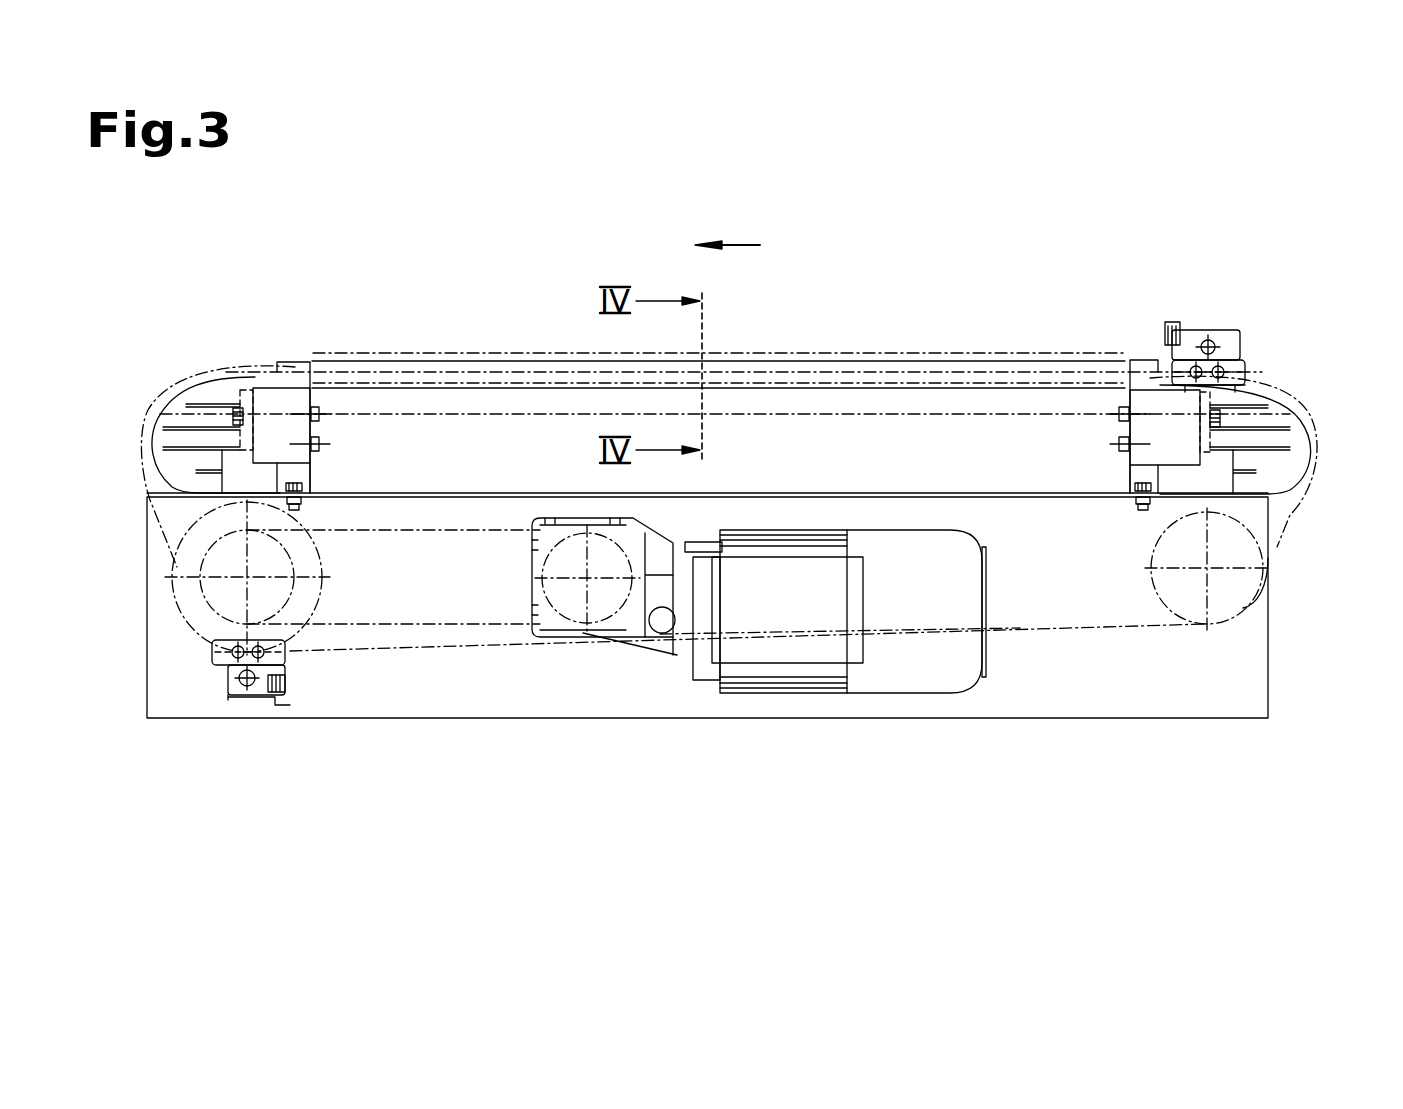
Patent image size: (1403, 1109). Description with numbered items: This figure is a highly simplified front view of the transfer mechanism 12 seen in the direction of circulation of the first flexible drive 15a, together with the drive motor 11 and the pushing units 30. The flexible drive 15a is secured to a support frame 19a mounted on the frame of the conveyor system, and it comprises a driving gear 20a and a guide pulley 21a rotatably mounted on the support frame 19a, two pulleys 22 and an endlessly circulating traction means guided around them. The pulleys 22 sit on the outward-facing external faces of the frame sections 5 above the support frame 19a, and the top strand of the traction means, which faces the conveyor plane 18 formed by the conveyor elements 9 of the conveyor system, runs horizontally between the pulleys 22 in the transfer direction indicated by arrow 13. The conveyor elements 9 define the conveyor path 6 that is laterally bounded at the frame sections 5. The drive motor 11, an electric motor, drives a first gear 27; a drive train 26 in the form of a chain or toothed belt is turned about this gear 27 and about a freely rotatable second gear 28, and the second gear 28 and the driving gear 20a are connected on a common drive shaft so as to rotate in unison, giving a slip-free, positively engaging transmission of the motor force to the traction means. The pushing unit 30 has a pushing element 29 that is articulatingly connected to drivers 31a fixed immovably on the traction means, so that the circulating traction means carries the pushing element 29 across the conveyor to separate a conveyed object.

The frame section 5 is at (312, 473).
The conveyor path 6 is at (862, 300).
The conveyor element 9 is at (500, 357).
The drive motor 11 is at (950, 694).
The transfer mechanism 12 is at (1182, 220).
The arrow indicating transfer direction 13 is at (741, 243).
The first flexible drive 15a is at (1300, 560).
The conveyor plane 18 is at (1003, 352).
The support frame 19a is at (1205, 720).
The driving gear 20a is at (190, 606).
The guide pulley 21a is at (1268, 617).
The pulley 22 is at (175, 393).
The drive train 26 is at (412, 625).
The first gear 27 is at (605, 640).
The second gear 28 is at (165, 576).
The pushing element 29 is at (1165, 330).
The pushing unit 30 is at (1250, 295).
The driver 31a is at (1233, 340).